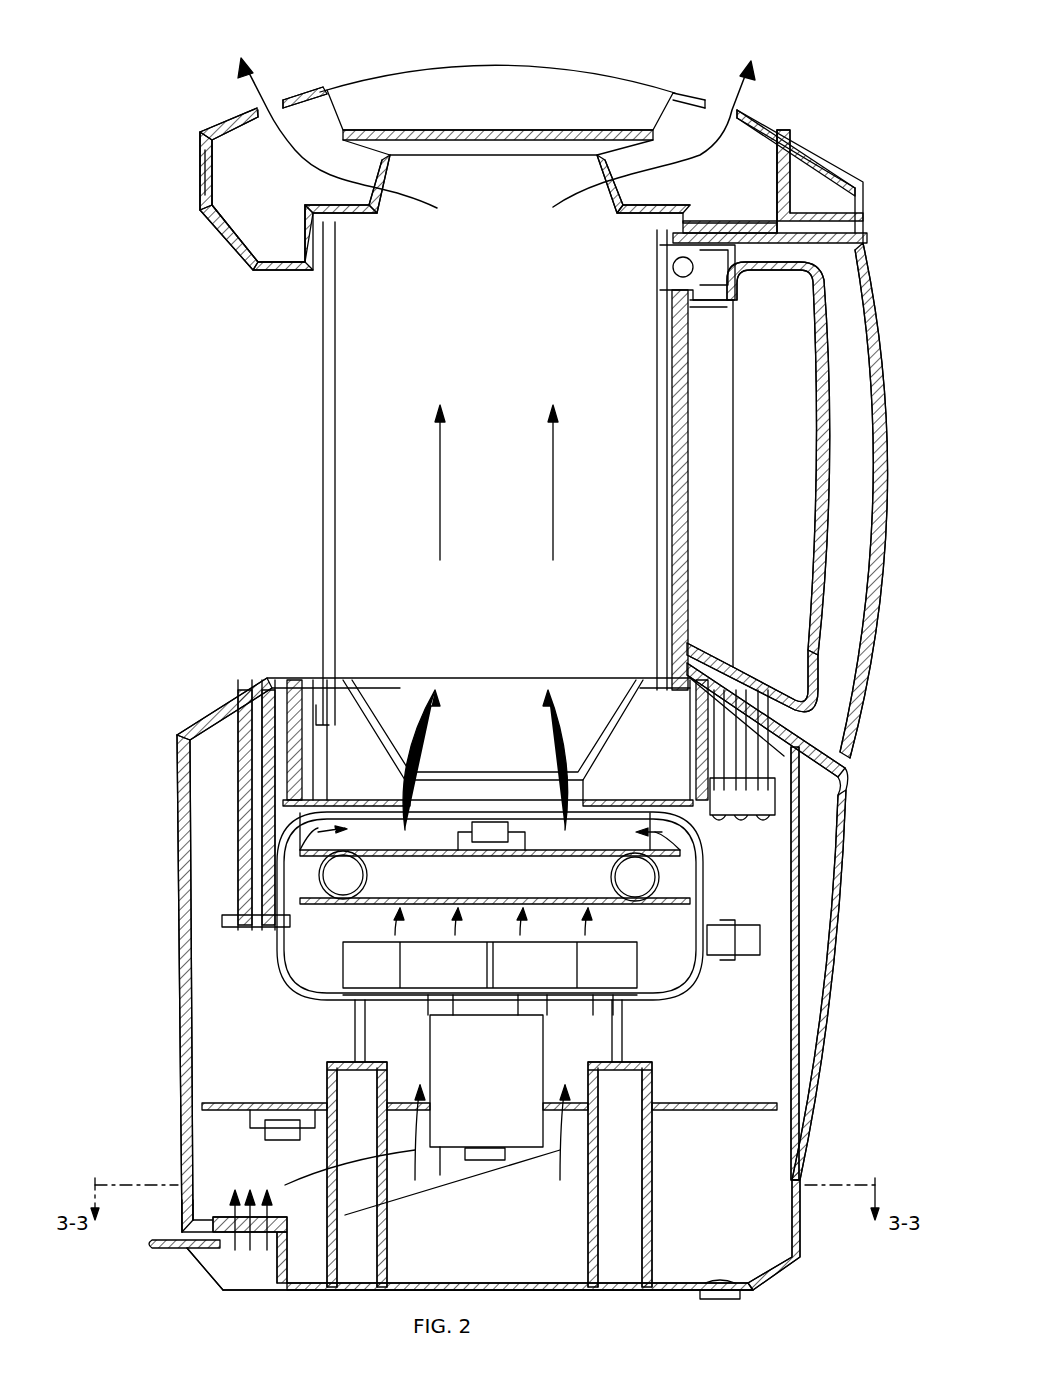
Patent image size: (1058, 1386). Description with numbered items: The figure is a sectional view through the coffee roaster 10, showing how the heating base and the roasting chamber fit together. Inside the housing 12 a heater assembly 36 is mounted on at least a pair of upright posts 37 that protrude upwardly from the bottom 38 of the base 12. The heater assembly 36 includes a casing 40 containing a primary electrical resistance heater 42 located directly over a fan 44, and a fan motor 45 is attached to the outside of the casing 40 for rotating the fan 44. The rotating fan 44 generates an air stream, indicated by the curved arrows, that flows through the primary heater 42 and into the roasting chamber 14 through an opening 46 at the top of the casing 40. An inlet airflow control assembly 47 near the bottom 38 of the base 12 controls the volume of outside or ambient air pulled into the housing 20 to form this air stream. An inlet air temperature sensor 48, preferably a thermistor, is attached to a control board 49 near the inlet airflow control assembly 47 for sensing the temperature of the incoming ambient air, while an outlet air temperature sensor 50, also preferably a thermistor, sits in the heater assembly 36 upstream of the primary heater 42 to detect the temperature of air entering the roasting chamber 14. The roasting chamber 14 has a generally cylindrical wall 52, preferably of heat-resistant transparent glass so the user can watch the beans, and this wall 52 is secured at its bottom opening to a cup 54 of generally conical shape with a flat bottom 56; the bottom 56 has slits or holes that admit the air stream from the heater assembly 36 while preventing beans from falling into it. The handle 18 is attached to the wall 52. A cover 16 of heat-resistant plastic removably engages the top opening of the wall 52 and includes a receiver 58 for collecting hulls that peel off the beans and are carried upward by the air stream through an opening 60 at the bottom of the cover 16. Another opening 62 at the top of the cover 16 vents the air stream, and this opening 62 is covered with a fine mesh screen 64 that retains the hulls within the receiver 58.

The kettle 10 is at (648, 56).
The housing 12 is at (176, 968).
The roasting chamber 14 is at (320, 492).
The cover 16 is at (198, 160).
The handle 18 is at (888, 392).
The housing 20 is at (183, 1138).
The heater assembly 36 is at (712, 878).
The upright posts 37 is at (345, 1215).
The bottom 38 is at (560, 1292).
The casing 40 is at (690, 905).
The primary electrical resistance heater 42 is at (660, 858).
The fan 44 is at (615, 965).
The fan motor 45 is at (502, 1097).
The opening 46 is at (535, 790).
The inlet airflow control assembly 47 is at (220, 1215).
The inlet air temperature sensor 48 is at (280, 1145).
The control board 49 is at (265, 1105).
The outlet air temperature sensor 50 is at (482, 850).
The cylindrical wall 52 is at (323, 410).
The cup 54 is at (370, 705).
The flat bottom 56 is at (455, 780).
The receiver 58 is at (270, 262).
The opening 60 is at (500, 148).
The opening 62 is at (283, 97).
The fine mesh screen 64 is at (282, 100).